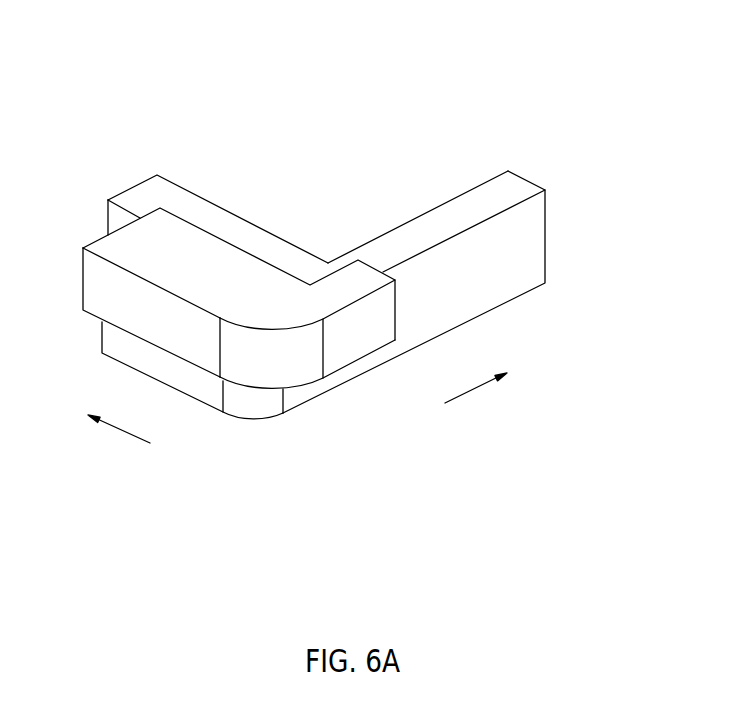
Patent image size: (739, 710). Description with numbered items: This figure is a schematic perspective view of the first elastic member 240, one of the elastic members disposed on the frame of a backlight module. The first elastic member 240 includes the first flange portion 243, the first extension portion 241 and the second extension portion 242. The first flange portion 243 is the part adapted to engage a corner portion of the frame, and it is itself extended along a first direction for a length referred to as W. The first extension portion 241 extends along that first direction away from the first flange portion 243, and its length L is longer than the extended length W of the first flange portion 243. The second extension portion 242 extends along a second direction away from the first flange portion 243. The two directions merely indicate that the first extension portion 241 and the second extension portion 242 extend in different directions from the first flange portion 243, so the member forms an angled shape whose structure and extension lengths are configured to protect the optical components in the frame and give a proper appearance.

The first elastic member 240 is at (100, 82).
The first extension portion 241 is at (138, 200).
The second extension portion 242 is at (513, 190).
The first flange portion 243 is at (267, 305).